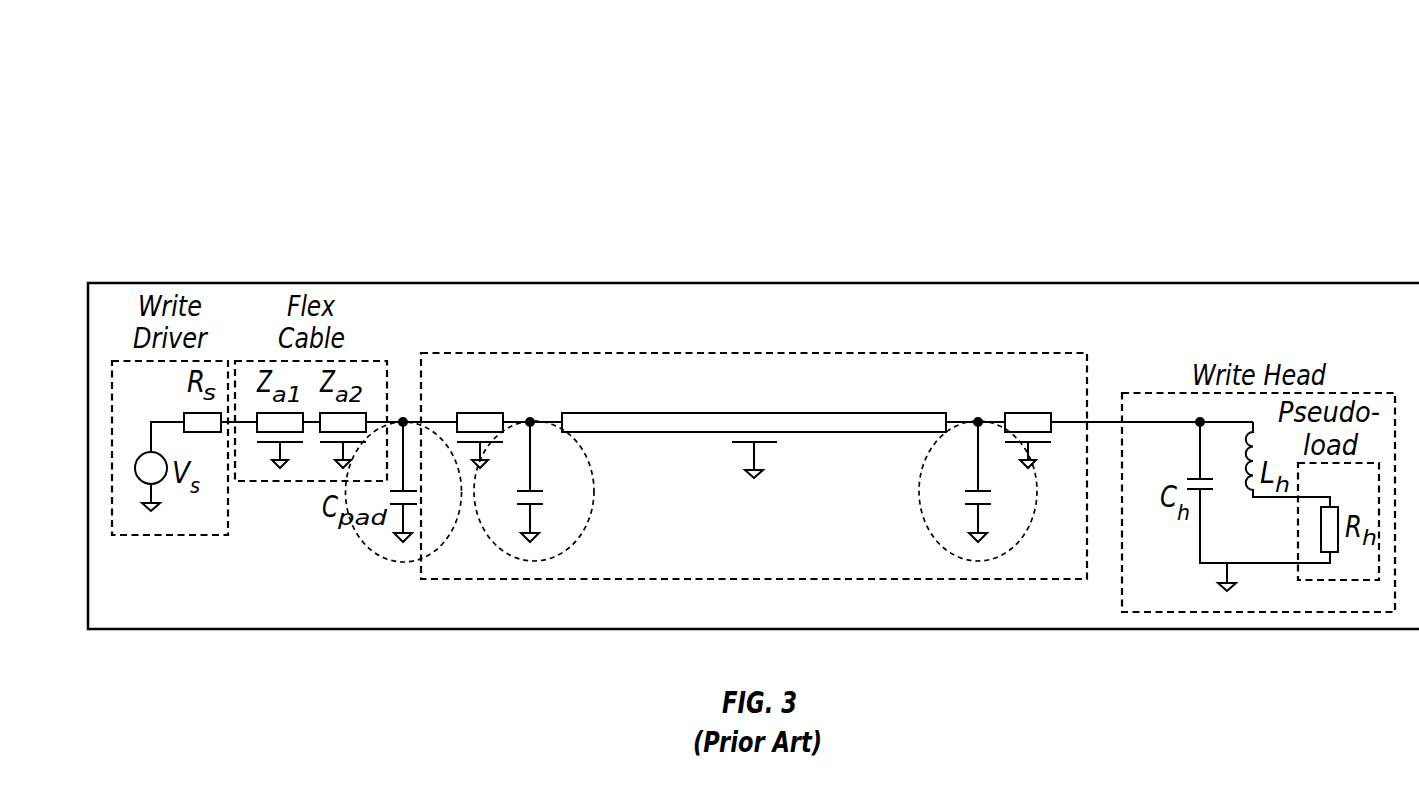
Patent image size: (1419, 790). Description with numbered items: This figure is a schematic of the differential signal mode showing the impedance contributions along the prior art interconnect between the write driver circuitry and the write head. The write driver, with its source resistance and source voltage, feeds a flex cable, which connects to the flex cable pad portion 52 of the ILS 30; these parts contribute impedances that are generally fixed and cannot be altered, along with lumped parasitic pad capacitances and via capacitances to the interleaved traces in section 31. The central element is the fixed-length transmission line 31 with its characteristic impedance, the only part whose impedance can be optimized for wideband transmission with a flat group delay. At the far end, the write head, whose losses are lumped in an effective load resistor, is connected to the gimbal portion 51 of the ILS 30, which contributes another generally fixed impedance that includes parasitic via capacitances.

The ILS 30 is at (1087, 218).
The flex cable pad portion 52 is at (550, 275).
The transmission line 31 is at (957, 275).
The gimbal portion 51 is at (1087, 275).